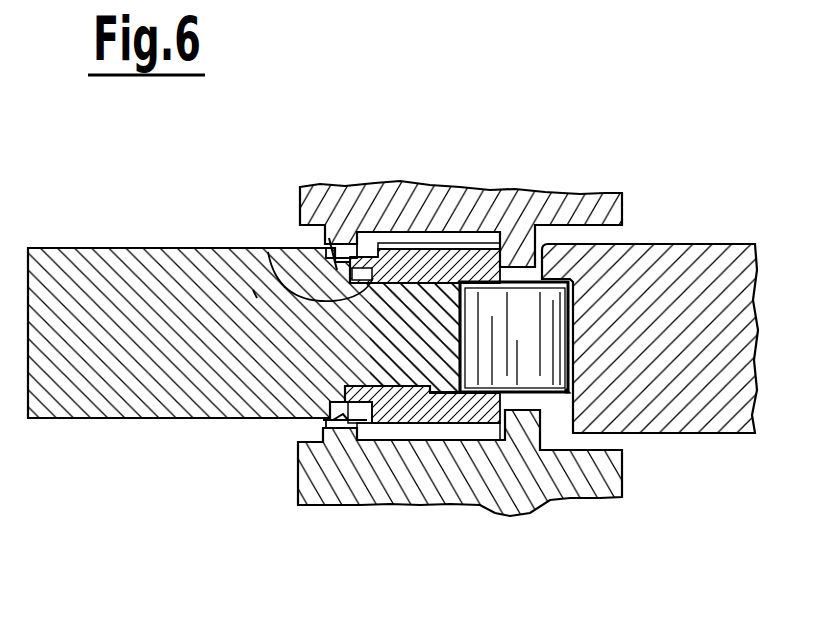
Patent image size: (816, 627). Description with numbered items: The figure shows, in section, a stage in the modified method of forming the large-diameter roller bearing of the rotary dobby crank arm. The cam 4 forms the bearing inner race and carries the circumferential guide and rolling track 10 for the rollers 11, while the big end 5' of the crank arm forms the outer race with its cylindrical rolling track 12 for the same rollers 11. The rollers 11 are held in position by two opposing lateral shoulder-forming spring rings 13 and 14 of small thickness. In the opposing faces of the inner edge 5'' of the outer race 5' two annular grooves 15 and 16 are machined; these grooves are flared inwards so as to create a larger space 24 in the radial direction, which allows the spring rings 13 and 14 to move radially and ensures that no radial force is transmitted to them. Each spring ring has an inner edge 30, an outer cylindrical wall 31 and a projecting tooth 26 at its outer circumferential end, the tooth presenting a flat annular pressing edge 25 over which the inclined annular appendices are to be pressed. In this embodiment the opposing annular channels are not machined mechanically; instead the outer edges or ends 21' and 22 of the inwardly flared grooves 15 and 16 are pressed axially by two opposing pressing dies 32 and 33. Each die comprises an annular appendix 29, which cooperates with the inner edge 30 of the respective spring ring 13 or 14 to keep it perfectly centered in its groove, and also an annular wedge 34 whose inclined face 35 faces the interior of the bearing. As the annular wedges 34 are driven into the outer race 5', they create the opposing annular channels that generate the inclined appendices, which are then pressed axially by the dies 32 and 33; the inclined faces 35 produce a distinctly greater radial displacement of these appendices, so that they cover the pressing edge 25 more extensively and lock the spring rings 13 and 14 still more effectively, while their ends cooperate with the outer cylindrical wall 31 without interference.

The cam 4 is at (703, 278).
The big end of the crank arm 5' is at (244, 286).
The inner edge of the outer race 5'' is at (415, 430).
The circumferential guide and rolling track 10 is at (570, 395).
The rollers 11 is at (550, 340).
The cylindrical rolling track 12 is at (447, 460).
The shoulder-forming spring ring 13 is at (435, 268).
The shoulder-forming spring ring 14 is at (402, 412).
The annular groove 15 is at (362, 272).
The annular groove 16 is at (362, 415).
The outer edge of the annular groove 21' is at (359, 188).
The end of the annular appendix 22 is at (350, 440).
The larger space 24 is at (327, 238).
The flat annular pressing edge 25 is at (233, 265).
The projecting tooth 26 is at (256, 297).
The annular appendix 29 is at (540, 262).
The inner edge of the spring ring 30 is at (517, 250).
The outer cylindrical wall 31 is at (392, 246).
The pressing die 32 is at (470, 213).
The pressing die 33 is at (478, 478).
The annular wedge 34 is at (328, 238).
The inclined face 35 is at (330, 238).